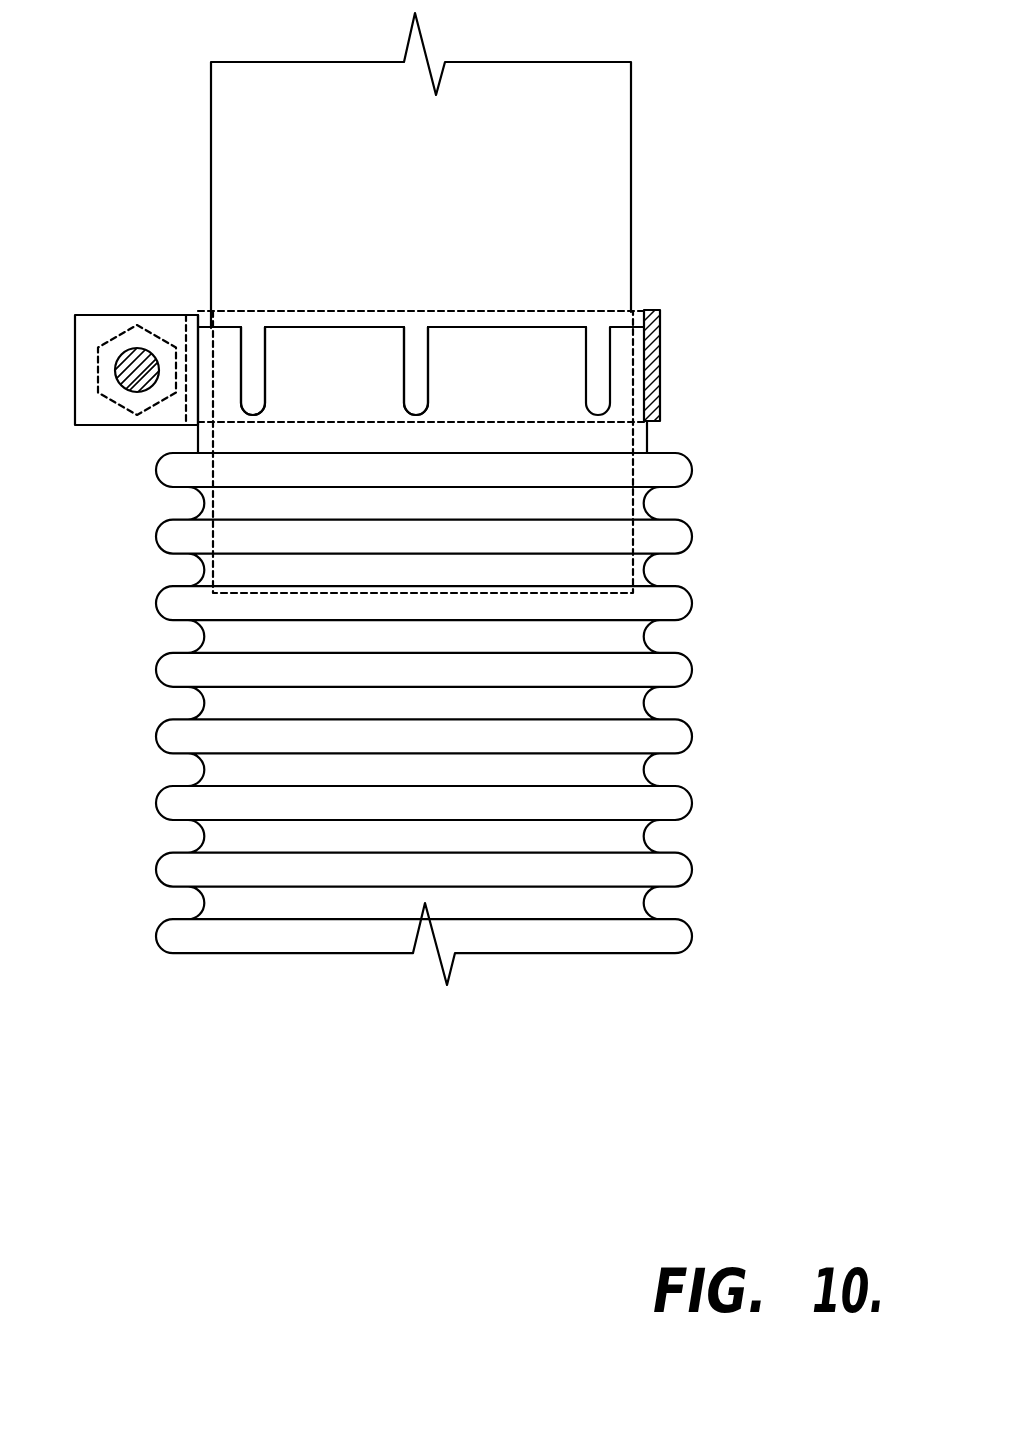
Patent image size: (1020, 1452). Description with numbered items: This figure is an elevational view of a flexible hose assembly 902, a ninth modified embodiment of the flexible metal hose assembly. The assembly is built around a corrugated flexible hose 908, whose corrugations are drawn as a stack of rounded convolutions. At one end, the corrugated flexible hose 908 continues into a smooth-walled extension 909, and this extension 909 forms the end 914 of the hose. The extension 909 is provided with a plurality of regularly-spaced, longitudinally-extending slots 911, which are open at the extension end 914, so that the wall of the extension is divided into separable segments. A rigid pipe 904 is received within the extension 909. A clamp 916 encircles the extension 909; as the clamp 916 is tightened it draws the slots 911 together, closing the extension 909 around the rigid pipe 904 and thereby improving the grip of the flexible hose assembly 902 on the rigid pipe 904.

The flexible hose assembly 902 is at (133, 80).
The rigid pipe 904 is at (631, 62).
The corrugated flexible hose 908 is at (670, 953).
The smooth-walled extension 909 is at (548, 395).
The slots 911 is at (407, 345).
The extension end 914 is at (470, 327).
The clamp 916 is at (664, 311).